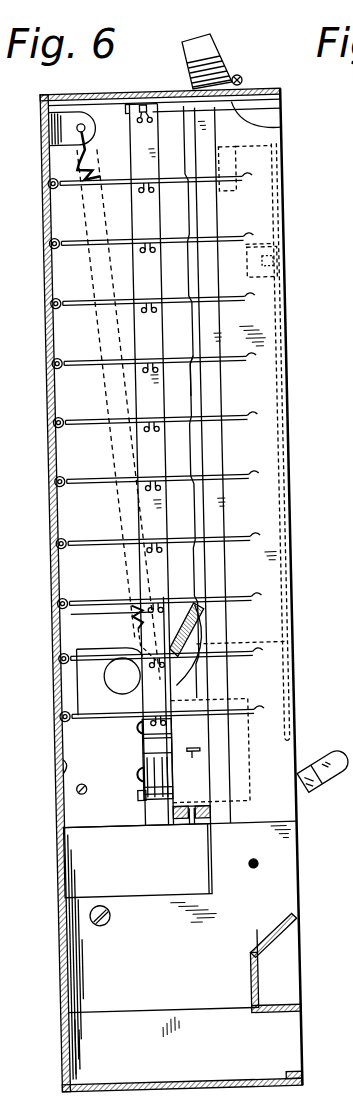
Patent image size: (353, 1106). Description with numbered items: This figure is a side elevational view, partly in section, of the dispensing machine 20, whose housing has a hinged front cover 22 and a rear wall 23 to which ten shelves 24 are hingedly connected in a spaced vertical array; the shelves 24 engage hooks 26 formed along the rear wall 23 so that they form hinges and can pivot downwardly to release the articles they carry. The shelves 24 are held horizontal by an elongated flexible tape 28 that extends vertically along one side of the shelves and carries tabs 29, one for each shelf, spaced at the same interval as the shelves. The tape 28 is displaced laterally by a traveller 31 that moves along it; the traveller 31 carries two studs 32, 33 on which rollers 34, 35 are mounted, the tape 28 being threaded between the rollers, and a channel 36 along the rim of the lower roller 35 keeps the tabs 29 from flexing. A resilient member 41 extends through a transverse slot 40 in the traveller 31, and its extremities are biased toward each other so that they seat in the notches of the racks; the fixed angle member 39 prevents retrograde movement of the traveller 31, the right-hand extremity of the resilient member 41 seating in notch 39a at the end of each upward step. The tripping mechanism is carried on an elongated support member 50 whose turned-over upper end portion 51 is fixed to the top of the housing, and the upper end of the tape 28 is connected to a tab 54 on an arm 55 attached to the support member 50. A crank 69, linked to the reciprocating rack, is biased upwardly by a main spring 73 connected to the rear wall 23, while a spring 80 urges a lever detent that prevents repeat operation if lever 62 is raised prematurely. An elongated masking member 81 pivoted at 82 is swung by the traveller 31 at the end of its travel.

The dispensing machine 20 is at (44, 519).
The hinged front cover 22 is at (208, 50).
The rear wall 23 is at (50, 589).
The shelves 24 is at (97, 245).
The hooks 26 is at (65, 361).
The elongated flexible tape 28 is at (143, 209).
The tabs 29 is at (152, 300).
The traveller 31 is at (200, 755).
The stud 32 is at (133, 725).
The stud 33 is at (137, 775).
The roller 34 is at (143, 742).
The lower roller 35 is at (143, 792).
The channel 36 is at (152, 802).
The fixed angle member 39 is at (187, 213).
The notch 39a is at (195, 372).
The transverse slot 40 is at (190, 764).
The resilient member 41 is at (192, 736).
The elongated support member 50 is at (255, 193).
The upper end portion 51 is at (281, 129).
The tab 54 is at (146, 108).
The arm 55 is at (270, 105).
The lever 62 is at (312, 767).
The crank 69 is at (185, 636).
The main spring 73 is at (97, 170).
The spring 80 is at (58, 763).
The elongated masking member 81 is at (278, 348).
The pivot 82 is at (285, 262).